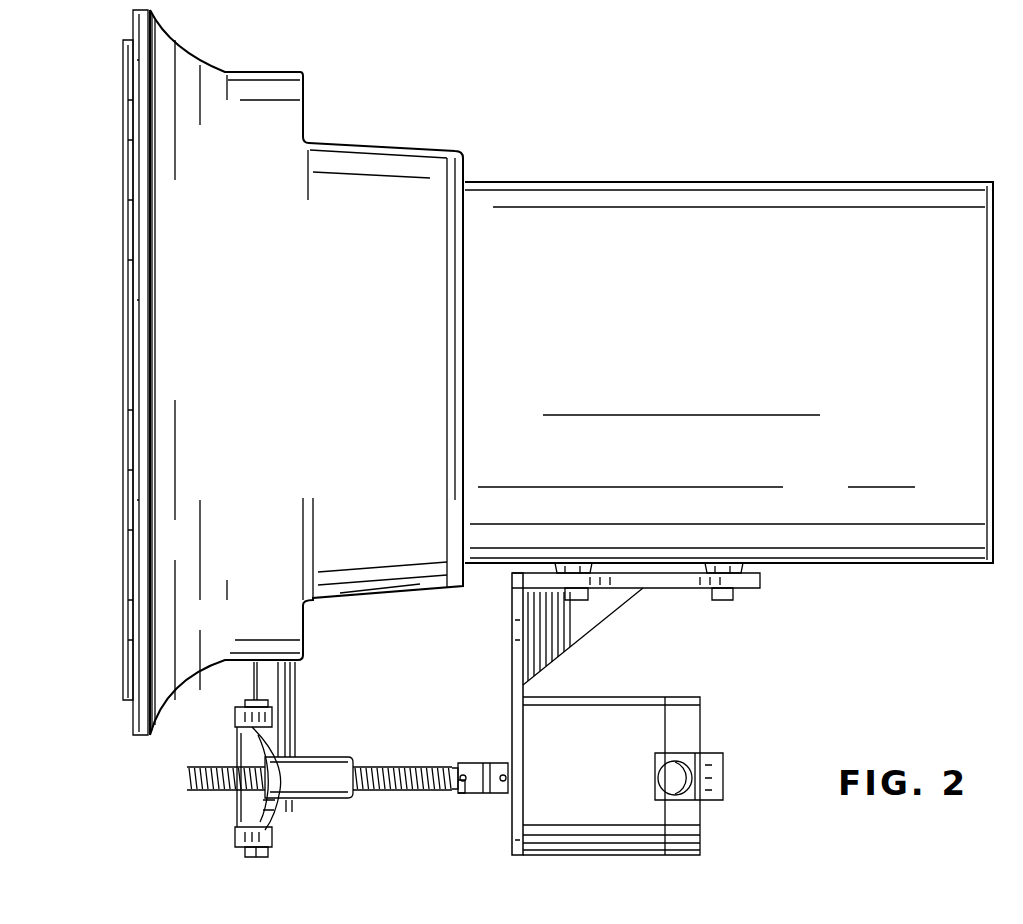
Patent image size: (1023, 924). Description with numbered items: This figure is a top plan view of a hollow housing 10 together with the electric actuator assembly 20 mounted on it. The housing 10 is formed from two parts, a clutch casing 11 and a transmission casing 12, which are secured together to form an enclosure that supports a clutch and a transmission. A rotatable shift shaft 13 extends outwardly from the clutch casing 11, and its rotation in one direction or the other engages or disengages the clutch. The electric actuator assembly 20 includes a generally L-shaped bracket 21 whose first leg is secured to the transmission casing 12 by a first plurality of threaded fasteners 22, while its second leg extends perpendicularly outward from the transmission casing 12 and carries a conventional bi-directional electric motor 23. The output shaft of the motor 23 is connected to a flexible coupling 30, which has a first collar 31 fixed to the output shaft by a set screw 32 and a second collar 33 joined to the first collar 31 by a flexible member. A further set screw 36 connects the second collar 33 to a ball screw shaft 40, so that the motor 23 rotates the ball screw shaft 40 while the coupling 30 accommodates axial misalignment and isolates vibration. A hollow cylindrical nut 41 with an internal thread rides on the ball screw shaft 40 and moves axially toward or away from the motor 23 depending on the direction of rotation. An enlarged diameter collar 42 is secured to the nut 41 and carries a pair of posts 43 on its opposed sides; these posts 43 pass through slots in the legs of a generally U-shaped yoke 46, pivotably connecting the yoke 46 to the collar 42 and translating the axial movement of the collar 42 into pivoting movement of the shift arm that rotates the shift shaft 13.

The hollow housing 10 is at (546, 157).
The clutch casing 11 is at (364, 284).
The transmission casing 12 is at (764, 284).
The shift shaft 13 is at (293, 683).
The electric actuator assembly 20 is at (720, 692).
The L-shaped bracket 21 is at (760, 579).
The threaded fasteners 22 is at (578, 598).
The bi-directional electric motor 23 is at (647, 710).
The flexible coupling 30 is at (480, 743).
The first collar 31 is at (487, 763).
The set screw 32 is at (494, 793).
The second collar 33 is at (477, 767).
The set screw 36 is at (462, 792).
The ball screw shaft 40 is at (397, 790).
The hollow cylindrical nut 41 is at (327, 765).
The enlarged diameter collar 42 is at (240, 802).
The posts 43 is at (247, 702).
The U-shaped yoke 46 is at (238, 720).